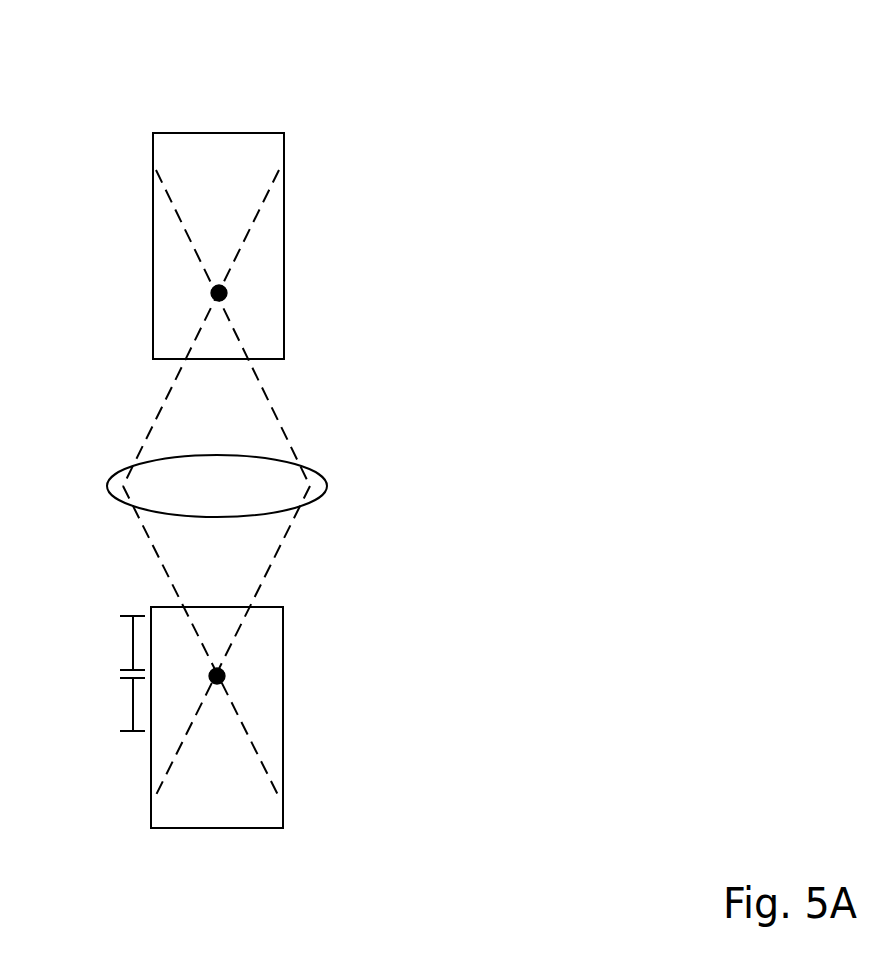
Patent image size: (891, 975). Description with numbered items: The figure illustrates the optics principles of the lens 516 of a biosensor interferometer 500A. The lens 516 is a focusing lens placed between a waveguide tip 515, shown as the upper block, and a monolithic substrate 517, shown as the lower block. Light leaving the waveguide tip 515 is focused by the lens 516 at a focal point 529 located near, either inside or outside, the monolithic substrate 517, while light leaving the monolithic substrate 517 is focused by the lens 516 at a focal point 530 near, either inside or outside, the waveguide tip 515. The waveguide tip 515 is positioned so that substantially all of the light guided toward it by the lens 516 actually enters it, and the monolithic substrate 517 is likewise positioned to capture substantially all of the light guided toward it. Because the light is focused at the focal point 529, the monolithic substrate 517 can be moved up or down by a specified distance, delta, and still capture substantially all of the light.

The biosensor interferometer 500A is at (260, 45).
The waveguide tip 515 is at (284, 148).
The focal point 530 is at (227, 295).
The lens 516 is at (327, 486).
The focal point 529 is at (223, 666).
The monolithic substrate 517 is at (282, 800).